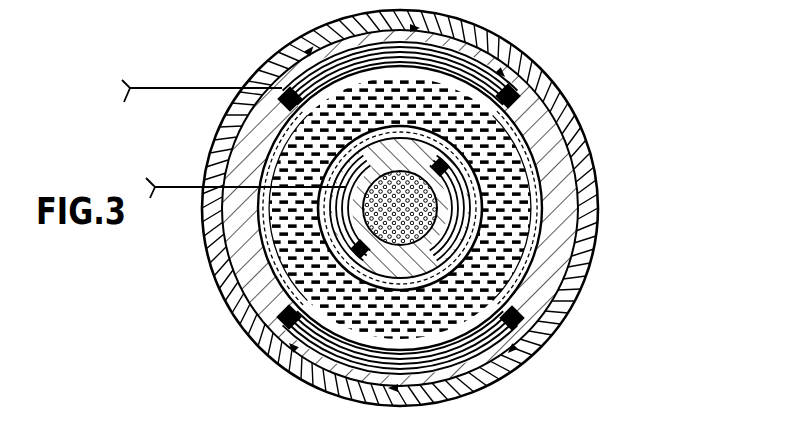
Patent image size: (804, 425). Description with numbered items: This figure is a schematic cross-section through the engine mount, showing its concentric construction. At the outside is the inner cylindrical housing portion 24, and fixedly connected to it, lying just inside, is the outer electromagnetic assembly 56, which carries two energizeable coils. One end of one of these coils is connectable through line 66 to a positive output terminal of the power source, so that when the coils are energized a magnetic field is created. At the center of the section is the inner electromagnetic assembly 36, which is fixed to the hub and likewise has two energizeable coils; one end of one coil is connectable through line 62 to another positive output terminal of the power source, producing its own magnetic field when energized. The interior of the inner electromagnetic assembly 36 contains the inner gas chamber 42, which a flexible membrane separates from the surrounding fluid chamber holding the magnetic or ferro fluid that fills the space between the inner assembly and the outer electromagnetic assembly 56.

The inner cylindrical housing portion 24 is at (552, 100).
The inner electromagnetic assembly 36 is at (430, 210).
The inner gas chamber 42 is at (437, 233).
The outer electromagnetic assembly 56 is at (512, 320).
The line 62 is at (182, 187).
The line 66 is at (188, 88).